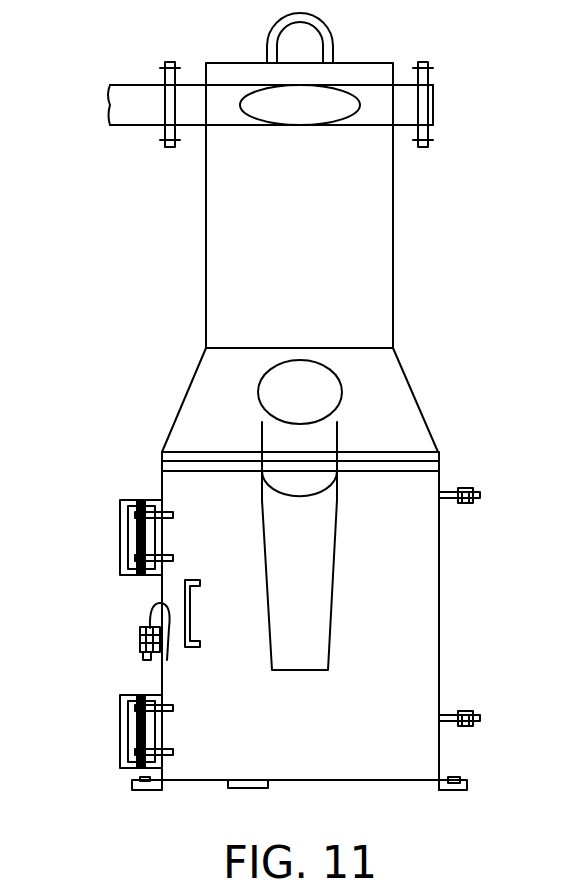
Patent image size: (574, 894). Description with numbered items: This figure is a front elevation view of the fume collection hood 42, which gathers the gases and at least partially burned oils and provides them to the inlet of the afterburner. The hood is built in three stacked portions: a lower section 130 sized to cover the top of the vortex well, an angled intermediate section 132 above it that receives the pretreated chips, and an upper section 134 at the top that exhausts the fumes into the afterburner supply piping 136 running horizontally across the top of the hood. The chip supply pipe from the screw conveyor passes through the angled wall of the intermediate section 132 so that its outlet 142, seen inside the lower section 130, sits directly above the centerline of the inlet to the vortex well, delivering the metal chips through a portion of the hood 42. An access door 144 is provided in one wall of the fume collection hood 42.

The fume collection hood 42 is at (186, 328).
The lower section 130 is at (420, 580).
The angled intermediate section 132 is at (395, 380).
The upper section 134 is at (380, 245).
The afterburner supply piping 136 is at (130, 92).
The outlet 142 is at (329, 559).
The access door 144 is at (202, 682).